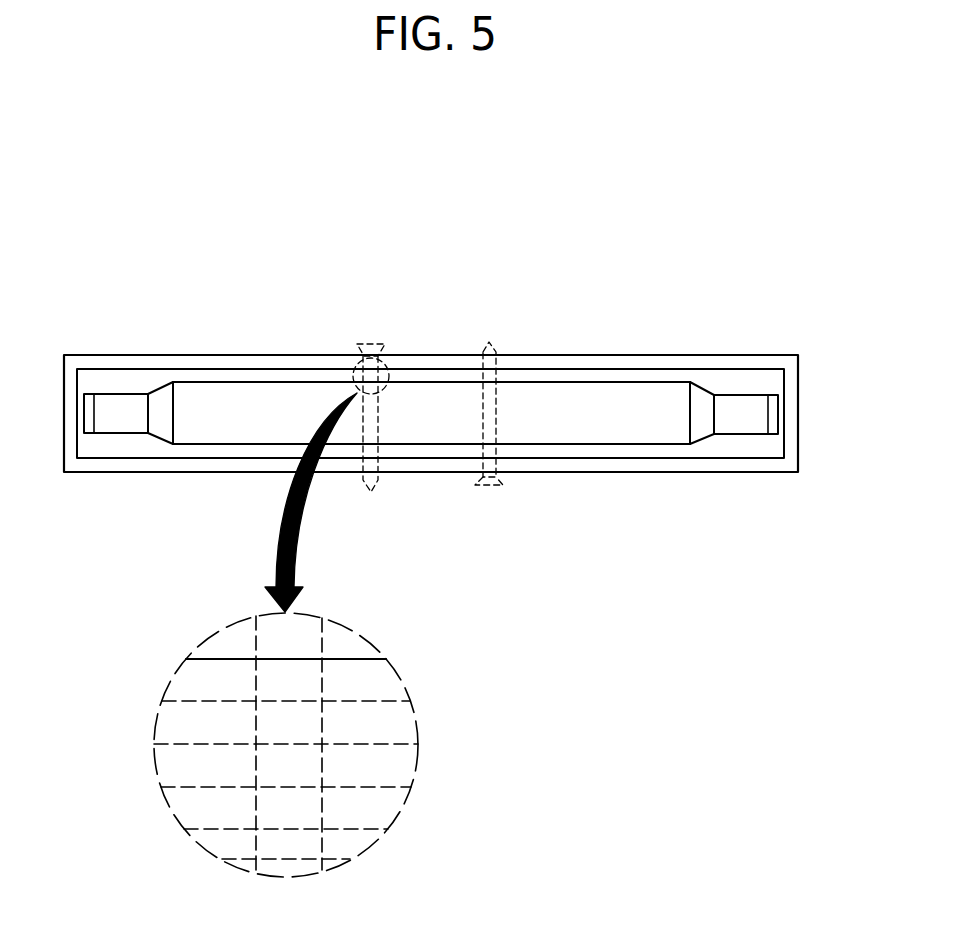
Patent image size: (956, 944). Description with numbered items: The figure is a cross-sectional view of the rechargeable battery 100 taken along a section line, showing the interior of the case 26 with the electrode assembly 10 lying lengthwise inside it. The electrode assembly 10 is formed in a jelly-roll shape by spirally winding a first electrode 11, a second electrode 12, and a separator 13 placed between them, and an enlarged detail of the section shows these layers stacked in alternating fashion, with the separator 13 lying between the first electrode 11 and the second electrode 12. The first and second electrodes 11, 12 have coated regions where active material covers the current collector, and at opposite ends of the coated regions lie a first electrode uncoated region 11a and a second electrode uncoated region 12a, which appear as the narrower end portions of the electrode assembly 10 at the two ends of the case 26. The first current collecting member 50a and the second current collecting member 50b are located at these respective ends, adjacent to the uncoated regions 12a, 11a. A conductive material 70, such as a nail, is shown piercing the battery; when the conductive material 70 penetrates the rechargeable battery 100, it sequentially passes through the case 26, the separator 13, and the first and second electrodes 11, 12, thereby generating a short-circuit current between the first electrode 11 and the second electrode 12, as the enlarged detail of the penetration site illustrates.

The rechargeable battery 100 is at (450, 200).
The electrode assembly 10 is at (576, 412).
The first electrode 11 is at (380, 813).
The second electrode 12 is at (393, 728).
The separator 13 is at (380, 681).
The first electrode uncoated region 11a is at (742, 410).
The second electrode uncoated region 12a is at (120, 408).
The case 26 is at (598, 467).
The first current collecting member 50a is at (88, 427).
The second current collecting member 50b is at (773, 428).
The conductive material 70 is at (370, 343).